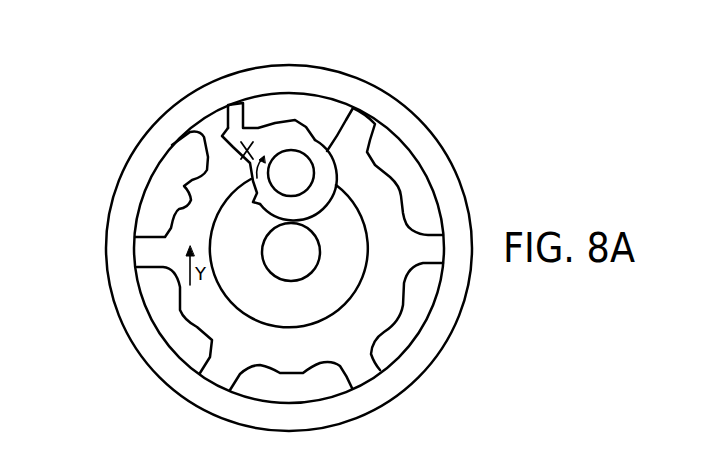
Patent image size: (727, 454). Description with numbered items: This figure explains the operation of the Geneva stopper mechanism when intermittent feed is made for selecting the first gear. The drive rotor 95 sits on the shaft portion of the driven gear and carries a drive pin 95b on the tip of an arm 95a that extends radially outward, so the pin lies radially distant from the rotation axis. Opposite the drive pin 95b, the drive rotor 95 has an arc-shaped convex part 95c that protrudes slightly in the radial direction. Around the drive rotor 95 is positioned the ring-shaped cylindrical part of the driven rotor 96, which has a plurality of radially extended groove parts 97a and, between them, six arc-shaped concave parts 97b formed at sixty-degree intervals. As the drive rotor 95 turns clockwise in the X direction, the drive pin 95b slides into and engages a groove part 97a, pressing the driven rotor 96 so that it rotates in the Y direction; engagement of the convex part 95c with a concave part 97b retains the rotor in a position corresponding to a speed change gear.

The drive rotor 95 is at (304, 129).
The arm 95a is at (247, 132).
The drive pin 95b is at (228, 143).
The arc-shaped convex part 95c is at (377, 123).
The driven rotor 96 is at (415, 150).
The groove part 97a is at (150, 246).
The arc-shaped concave part 97b is at (183, 198).